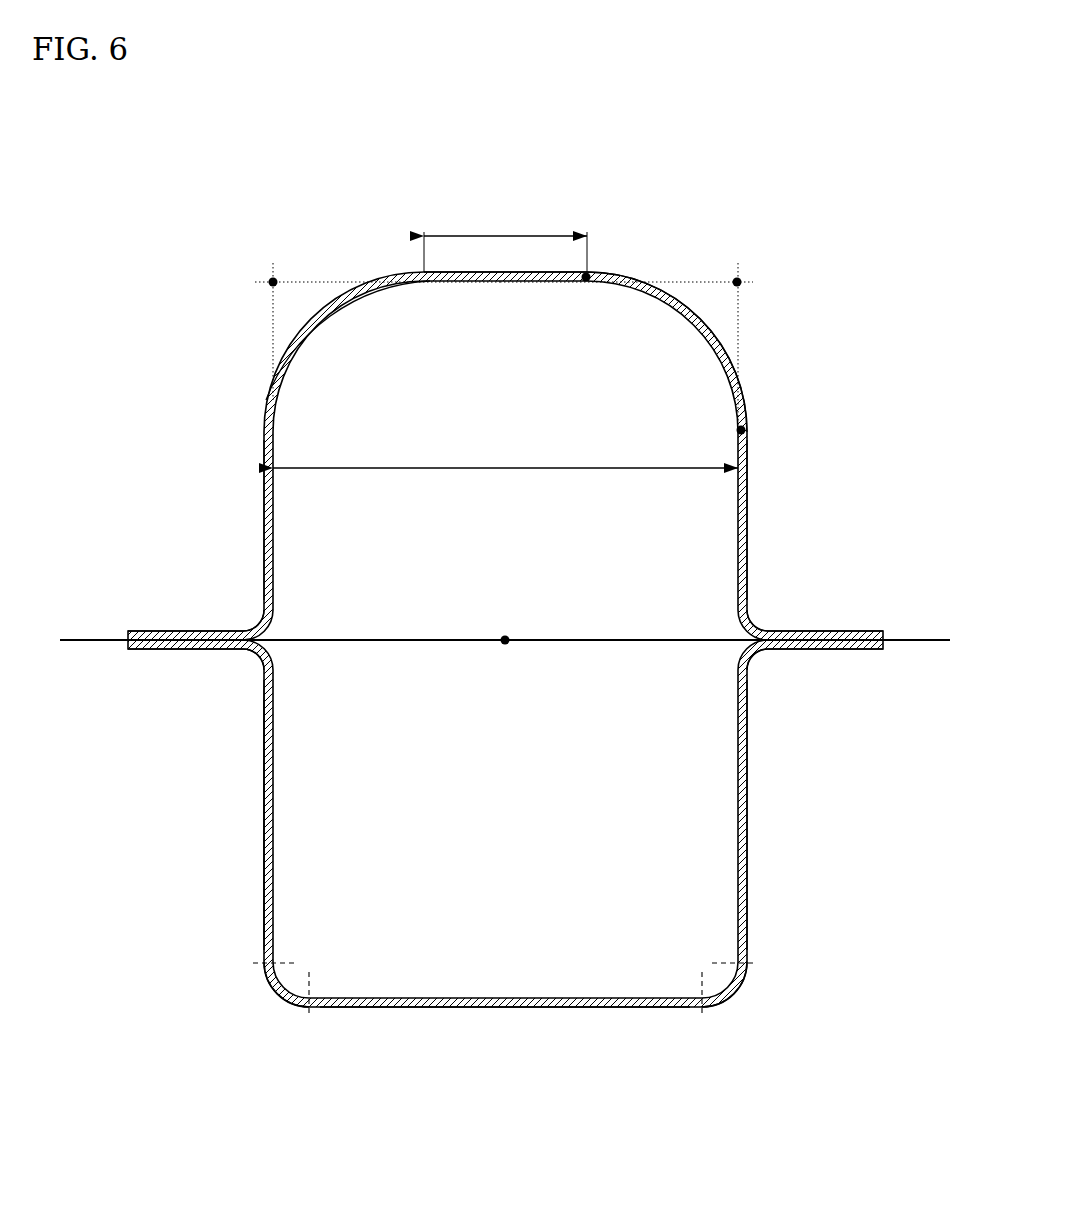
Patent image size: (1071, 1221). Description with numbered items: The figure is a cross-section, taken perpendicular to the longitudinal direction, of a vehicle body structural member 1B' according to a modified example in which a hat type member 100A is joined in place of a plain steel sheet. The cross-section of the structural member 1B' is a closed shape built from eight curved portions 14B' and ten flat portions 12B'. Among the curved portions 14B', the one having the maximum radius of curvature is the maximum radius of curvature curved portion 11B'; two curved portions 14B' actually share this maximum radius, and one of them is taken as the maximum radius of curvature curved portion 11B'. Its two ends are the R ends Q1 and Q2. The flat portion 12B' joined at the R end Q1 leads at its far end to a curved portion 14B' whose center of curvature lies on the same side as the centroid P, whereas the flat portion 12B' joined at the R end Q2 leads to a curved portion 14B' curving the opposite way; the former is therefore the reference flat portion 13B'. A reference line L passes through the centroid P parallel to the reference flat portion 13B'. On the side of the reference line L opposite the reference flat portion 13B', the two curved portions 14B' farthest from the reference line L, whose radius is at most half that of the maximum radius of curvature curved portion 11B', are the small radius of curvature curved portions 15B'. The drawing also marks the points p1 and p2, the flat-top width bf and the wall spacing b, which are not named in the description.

The vehicle body structural member 1B' is at (498, 601).
The hat type member 100A is at (167, 860).
The maximum radius of curvature curved portion 11B' is at (758, 352).
The flat portion 12B' is at (501, 759).
The reference flat portion 13B' is at (529, 307).
The curved portion 14B' is at (518, 509).
The small radius of curvature curved portion 15B' is at (508, 1011).
The end point of left curved portion p1 is at (272, 281).
The end point of right curved portion p2 is at (738, 281).
The R end Q1 is at (587, 277).
The R end Q2 is at (742, 430).
The width of top flat portion bf is at (505, 234).
The width between vertical walls b is at (505, 488).
The reference line L is at (495, 640).
The centroid P is at (508, 637).